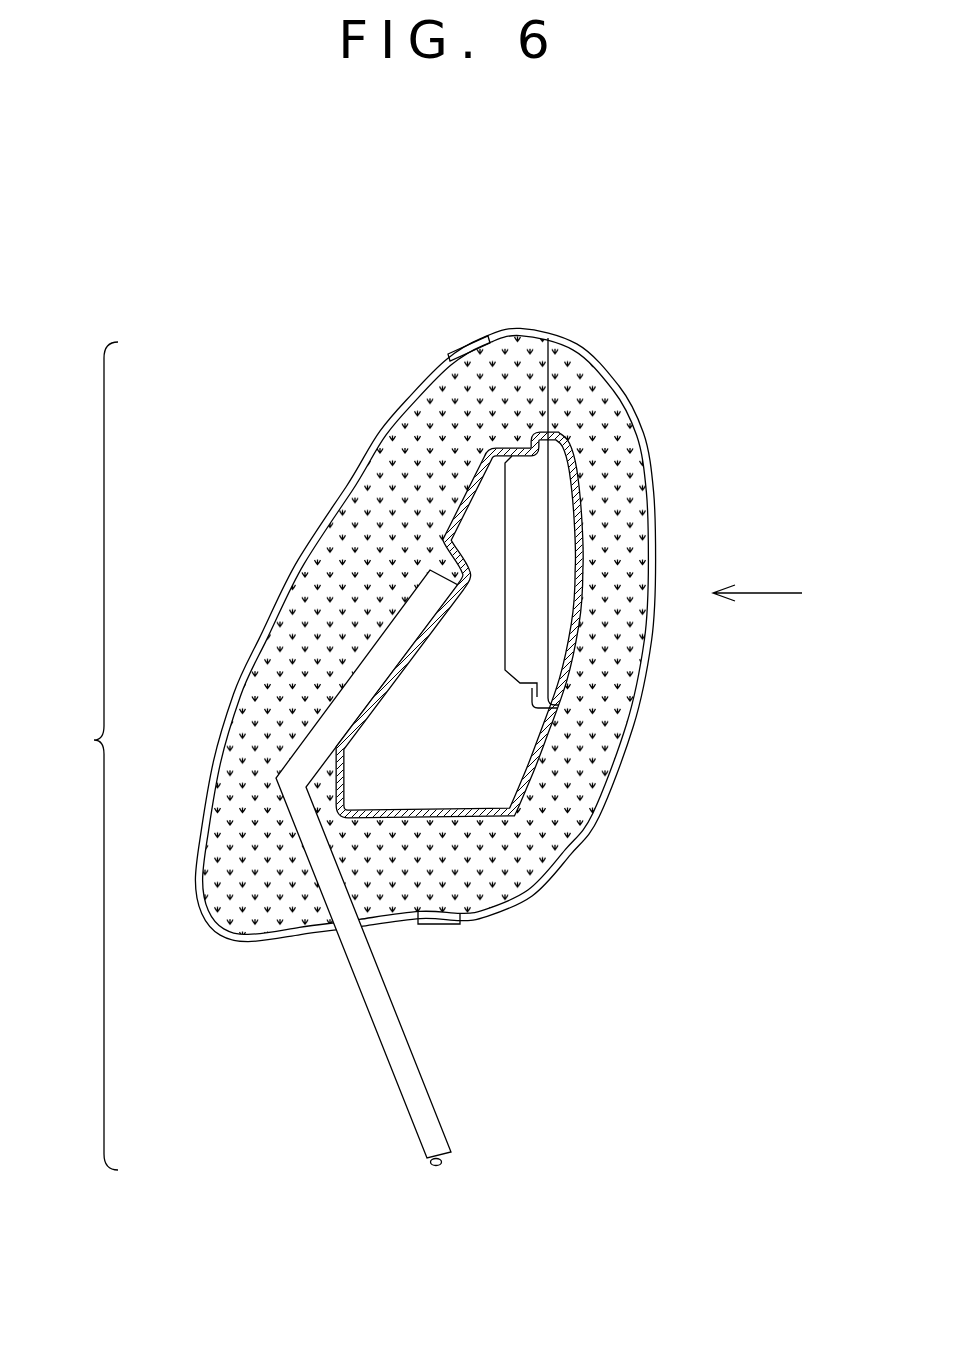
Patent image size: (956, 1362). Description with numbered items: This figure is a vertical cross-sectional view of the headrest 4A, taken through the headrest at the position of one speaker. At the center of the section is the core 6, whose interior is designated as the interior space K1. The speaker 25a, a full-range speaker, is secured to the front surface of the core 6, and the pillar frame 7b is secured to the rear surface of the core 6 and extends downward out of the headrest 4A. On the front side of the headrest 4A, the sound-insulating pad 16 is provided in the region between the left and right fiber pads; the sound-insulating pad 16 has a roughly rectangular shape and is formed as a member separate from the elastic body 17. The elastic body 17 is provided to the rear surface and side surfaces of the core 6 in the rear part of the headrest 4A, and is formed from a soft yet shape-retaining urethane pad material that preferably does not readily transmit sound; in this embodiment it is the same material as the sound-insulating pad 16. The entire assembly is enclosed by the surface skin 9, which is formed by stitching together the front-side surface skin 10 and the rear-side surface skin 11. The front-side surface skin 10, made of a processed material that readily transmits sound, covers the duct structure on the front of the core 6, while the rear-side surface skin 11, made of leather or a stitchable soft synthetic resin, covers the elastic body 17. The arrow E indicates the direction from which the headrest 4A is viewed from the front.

The surface skin 9 is at (637, 220).
The front-side surface skin 10 is at (633, 402).
The rear-side surface skin 11 is at (383, 420).
The core 6 is at (453, 517).
The speaker 25a is at (530, 517).
The elastic body 17 is at (307, 642).
The sound-insulating pad 16 is at (592, 720).
The pillar frame 7b is at (417, 1113).
The interior space K1 is at (413, 776).
The arrow E is at (765, 579).
The headrest 4A is at (86, 756).